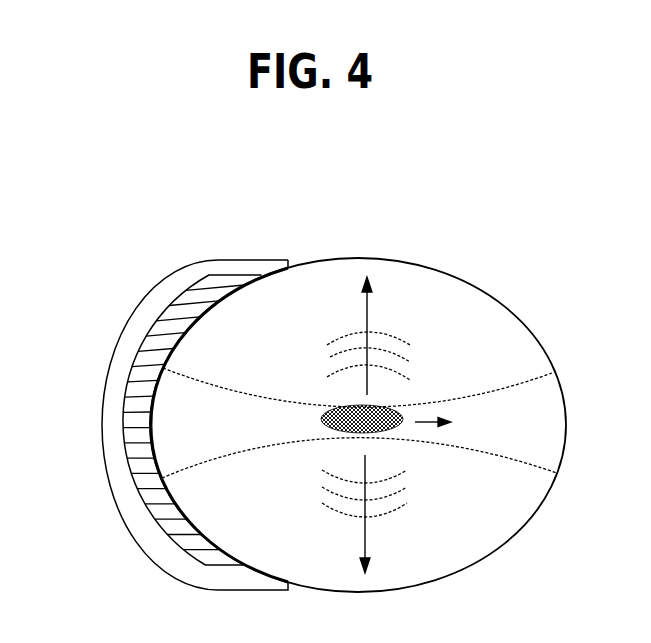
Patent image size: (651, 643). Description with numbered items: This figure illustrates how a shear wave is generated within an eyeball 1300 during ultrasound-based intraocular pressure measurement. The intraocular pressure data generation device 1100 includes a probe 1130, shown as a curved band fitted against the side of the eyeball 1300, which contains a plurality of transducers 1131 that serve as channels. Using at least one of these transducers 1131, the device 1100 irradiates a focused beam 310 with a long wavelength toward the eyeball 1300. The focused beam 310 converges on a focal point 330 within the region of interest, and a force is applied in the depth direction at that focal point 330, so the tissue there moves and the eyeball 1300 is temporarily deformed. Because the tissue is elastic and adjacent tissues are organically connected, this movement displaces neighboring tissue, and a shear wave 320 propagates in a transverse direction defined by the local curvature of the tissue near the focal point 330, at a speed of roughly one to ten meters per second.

The intraocular pressure data generation device 1100 is at (103, 388).
The probe 1130 is at (243, 276).
The transducers 1131 is at (180, 298).
The eyeball 1300 is at (355, 258).
The focused beam 310 is at (522, 377).
The shear wave 320 is at (390, 335).
The focal point 330 is at (390, 403).